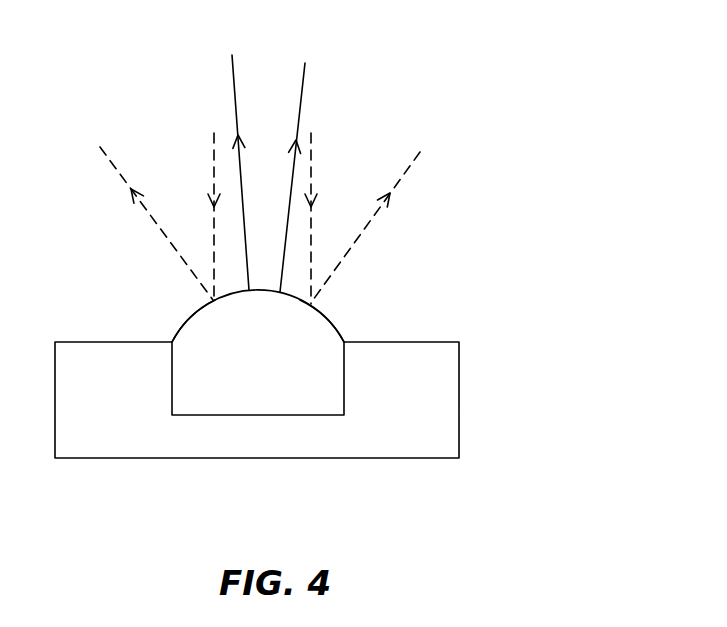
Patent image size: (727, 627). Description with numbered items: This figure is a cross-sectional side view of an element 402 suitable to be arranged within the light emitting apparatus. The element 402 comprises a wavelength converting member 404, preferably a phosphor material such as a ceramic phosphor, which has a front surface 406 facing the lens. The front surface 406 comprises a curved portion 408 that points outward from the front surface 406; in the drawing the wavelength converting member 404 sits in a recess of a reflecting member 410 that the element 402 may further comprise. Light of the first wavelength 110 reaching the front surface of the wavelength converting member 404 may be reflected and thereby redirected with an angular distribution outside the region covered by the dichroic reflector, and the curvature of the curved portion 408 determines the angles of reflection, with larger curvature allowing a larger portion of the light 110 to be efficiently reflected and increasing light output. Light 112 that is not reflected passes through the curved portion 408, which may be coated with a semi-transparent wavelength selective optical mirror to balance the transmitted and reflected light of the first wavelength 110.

The element 402 is at (535, 163).
The wavelength converting member 404 is at (323, 336).
The front surface 406 is at (185, 322).
The curved portion 408 is at (322, 314).
The reflecting member 410 is at (440, 342).
The light of the first wavelength 110 is at (212, 173).
The emitted light rays 112 is at (305, 79).